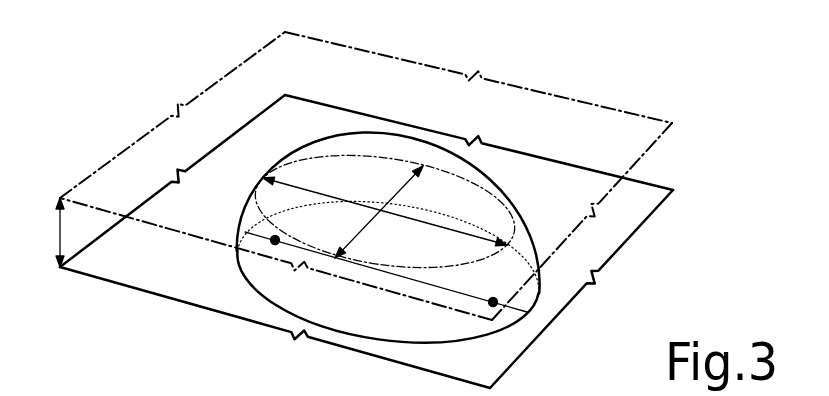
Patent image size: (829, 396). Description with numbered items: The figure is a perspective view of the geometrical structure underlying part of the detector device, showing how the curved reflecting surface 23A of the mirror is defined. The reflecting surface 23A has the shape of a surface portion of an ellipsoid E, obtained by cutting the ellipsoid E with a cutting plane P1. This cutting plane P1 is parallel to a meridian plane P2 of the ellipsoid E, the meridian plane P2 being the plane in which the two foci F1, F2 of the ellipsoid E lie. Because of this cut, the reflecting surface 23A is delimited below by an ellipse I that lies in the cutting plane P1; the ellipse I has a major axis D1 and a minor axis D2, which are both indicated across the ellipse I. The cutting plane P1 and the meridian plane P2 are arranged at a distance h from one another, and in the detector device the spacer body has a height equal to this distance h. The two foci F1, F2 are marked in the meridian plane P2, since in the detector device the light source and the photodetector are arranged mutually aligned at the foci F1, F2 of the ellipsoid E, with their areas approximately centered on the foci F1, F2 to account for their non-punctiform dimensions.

The reflecting surface 23A is at (415, 140).
The ellipsoid E is at (388, 183).
The cutting plane P1 is at (597, 105).
The meridian plane P2 is at (640, 197).
The distance h is at (49, 232).
The ellipse I is at (287, 155).
The major axis D1 is at (428, 223).
The minor axis D2 is at (388, 203).
The focus F1 is at (275, 240).
The focus F2 is at (493, 302).